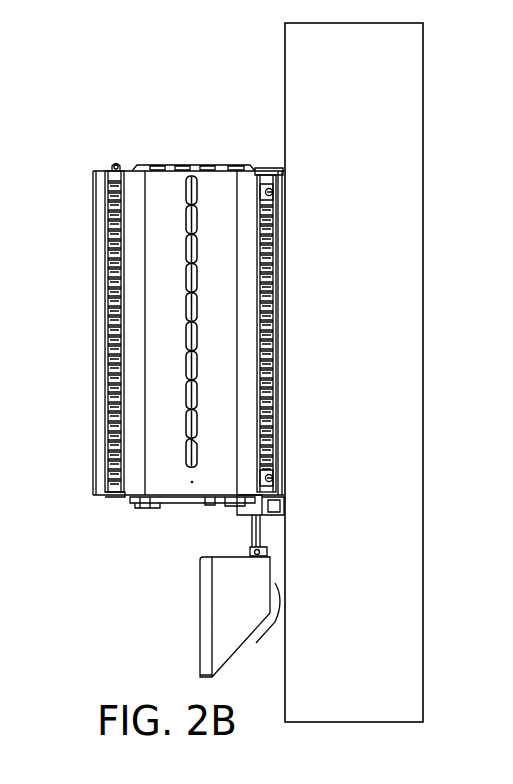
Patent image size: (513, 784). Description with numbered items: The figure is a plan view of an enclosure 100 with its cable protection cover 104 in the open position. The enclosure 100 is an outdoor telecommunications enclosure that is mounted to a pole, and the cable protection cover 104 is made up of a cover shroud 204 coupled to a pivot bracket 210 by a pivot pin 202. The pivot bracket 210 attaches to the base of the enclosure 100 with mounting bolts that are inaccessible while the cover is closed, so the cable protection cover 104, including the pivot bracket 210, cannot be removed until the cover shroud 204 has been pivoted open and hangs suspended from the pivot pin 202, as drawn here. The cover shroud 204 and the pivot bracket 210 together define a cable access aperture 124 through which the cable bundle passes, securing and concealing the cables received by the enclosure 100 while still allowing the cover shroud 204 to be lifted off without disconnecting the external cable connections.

The enclosure 100 is at (72, 333).
The cable protection cover 104 is at (166, 600).
The cable access aperture 124 is at (262, 637).
The pivot pin 202 is at (268, 549).
The cover shroud 204 is at (217, 617).
The pivot bracket 210 is at (252, 531).